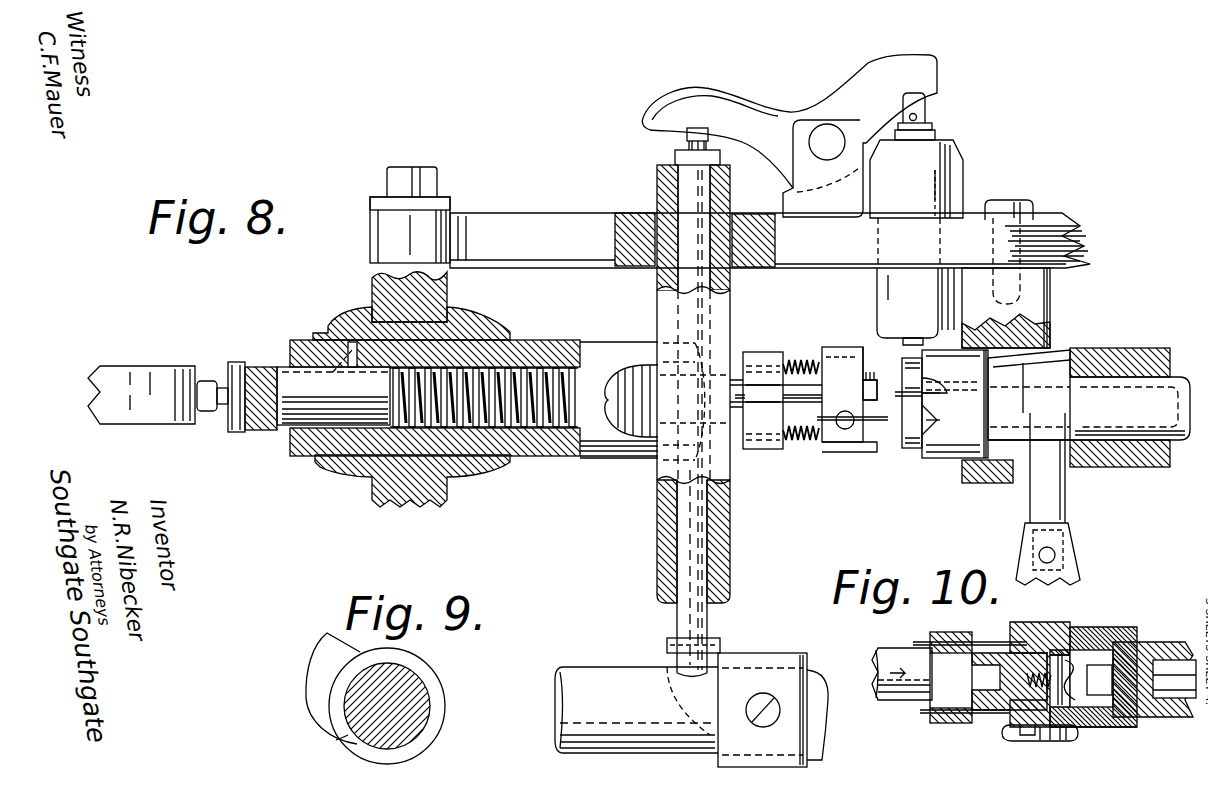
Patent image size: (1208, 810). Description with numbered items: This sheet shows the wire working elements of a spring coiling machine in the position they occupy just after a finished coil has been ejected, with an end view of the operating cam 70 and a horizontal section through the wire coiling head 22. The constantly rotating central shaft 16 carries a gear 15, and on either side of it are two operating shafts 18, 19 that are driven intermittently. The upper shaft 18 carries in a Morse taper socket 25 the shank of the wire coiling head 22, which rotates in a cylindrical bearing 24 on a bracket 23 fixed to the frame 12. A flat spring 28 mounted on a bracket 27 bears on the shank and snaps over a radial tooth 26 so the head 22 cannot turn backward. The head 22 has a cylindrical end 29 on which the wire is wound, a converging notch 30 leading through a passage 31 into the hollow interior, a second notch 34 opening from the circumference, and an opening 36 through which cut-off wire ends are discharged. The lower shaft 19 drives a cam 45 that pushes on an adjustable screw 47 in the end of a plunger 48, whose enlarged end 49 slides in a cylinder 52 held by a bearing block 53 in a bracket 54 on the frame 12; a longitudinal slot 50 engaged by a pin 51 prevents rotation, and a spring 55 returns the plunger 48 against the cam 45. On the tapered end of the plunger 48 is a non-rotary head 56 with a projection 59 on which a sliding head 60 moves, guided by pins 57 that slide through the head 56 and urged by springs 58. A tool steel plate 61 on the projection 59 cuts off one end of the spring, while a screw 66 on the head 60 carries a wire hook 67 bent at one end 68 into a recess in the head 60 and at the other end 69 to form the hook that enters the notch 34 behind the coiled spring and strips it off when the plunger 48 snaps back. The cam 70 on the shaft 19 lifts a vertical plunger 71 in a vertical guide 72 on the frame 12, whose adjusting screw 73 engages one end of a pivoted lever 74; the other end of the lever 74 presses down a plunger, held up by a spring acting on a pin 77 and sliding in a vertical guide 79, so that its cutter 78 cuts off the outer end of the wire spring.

In FIG. 8, the frame 12 is at (536, 222).
In FIG. 8, the gear 15 is at (926, 106).
In FIG. 8, the central shaft 16 is at (936, 133).
In FIG. 8, the operating shaft 18 is at (1172, 380).
In FIG. 8, the operating shaft 19 is at (558, 685).
In FIG. 9, the operating shaft 19 is at (422, 730).
In FIG. 8, the wire coiling head 22 is at (945, 458).
In FIG. 10, the wire coiling head 22 is at (1128, 632).
In FIG. 8, the bracket 23 is at (1050, 302).
In FIG. 8, the cylindrical bearing 24 is at (1000, 484).
In FIG. 8, the Morse taper socket 25 is at (1040, 395).
In FIG. 10, the Morse taper socket 25 is at (1160, 656).
In FIG. 8, the tooth 26 is at (1070, 412).
In FIG. 8, the bracket 27 is at (1075, 548).
In FIG. 8, the spring 28 is at (1065, 500).
In FIG. 8, the cylindrical end 29 is at (910, 450).
In FIG. 8, the notch 30 is at (945, 390).
In FIG. 8, the passage 31 is at (898, 398).
In FIG. 8, the notch 34 is at (940, 421).
In FIG. 10, the notch 34 is at (1138, 728).
In FIG. 10, the opening 36 is at (1174, 679).
In FIG. 8, the cam 45 is at (140, 372).
In FIG. 8, the adjustable screw 47 is at (205, 412).
In FIG. 8, the plunger 48 is at (594, 385).
In FIG. 10, the plunger 48 is at (884, 702).
In FIG. 8, the enlarged end 49 is at (262, 433).
In FIG. 8, the longitudinal slot 50 is at (265, 366).
In FIG. 8, the pin 51 is at (336, 372).
In FIG. 8, the cylinder 52 is at (548, 352).
In FIG. 8, the bearing block 53 is at (485, 333).
In FIG. 8, the bracket 54 is at (446, 289).
In FIG. 8, the spring 55 is at (530, 445).
In FIG. 8, the non-rotary head 56 is at (758, 356).
In FIG. 10, the non-rotary head 56 is at (934, 722).
In FIG. 8, the guide pins 57 is at (805, 402).
In FIG. 10, the guide pins 57 is at (918, 644).
In FIG. 8, the springs 58 is at (800, 364).
In FIG. 8, the projection 59 is at (800, 420).
In FIG. 10, the projection 59 is at (996, 655).
In FIG. 8, the sliding head 60 is at (834, 350).
In FIG. 10, the sliding head 60 is at (1036, 628).
In FIG. 10, the plate 61 is at (1060, 712).
In FIG. 8, the screw 66 is at (845, 430).
In FIG. 10, the screw 66 is at (1043, 742).
In FIG. 8, the hook 67 is at (862, 395).
In FIG. 10, the hook 67 is at (1006, 740).
In FIG. 10, the bent end 68 is at (1005, 733).
In FIG. 8, the hook end 69 is at (884, 421).
In FIG. 10, the hook end 69 is at (1075, 735).
In FIG. 8, the cam 70 is at (720, 648).
In FIG. 9, the cam 70 is at (322, 645).
In FIG. 8, the vertical plunger 71 is at (680, 620).
In FIG. 8, the vertical guide 72 is at (657, 540).
In FIG. 8, the adjusting screw 73 is at (686, 135).
In FIG. 8, the lever 74 is at (730, 106).
In FIG. 8, the pin 77 is at (909, 115).
In FIG. 8, the cutter 78 is at (903, 344).
In FIG. 8, the vertical guide 79 is at (962, 188).